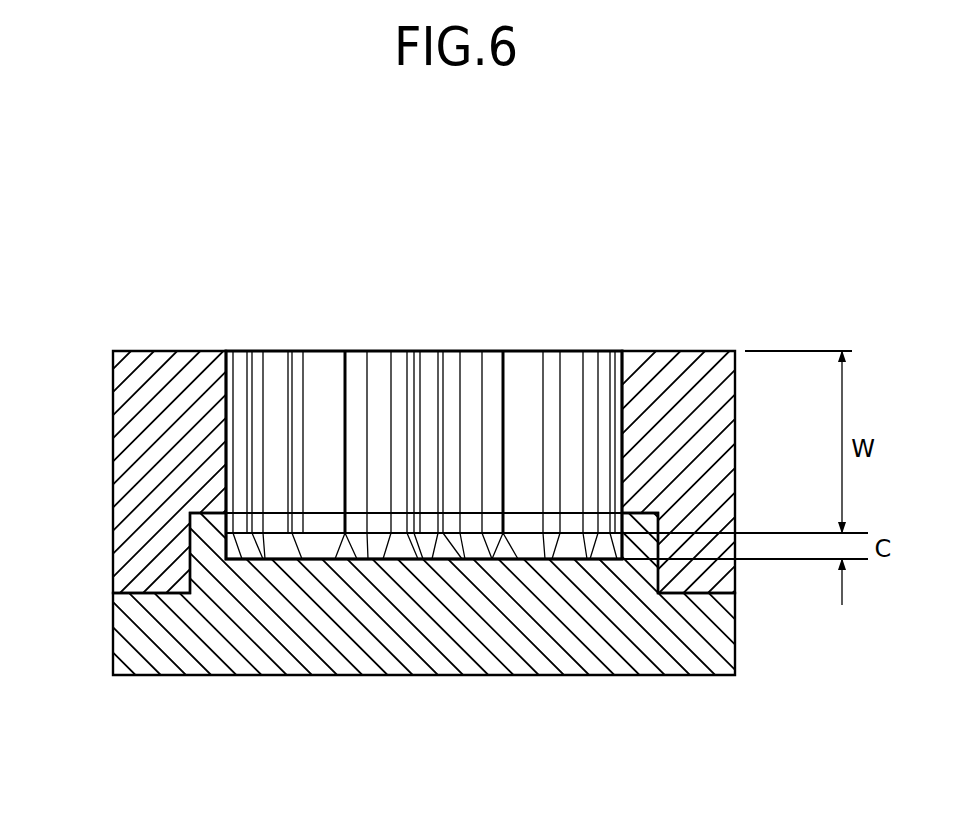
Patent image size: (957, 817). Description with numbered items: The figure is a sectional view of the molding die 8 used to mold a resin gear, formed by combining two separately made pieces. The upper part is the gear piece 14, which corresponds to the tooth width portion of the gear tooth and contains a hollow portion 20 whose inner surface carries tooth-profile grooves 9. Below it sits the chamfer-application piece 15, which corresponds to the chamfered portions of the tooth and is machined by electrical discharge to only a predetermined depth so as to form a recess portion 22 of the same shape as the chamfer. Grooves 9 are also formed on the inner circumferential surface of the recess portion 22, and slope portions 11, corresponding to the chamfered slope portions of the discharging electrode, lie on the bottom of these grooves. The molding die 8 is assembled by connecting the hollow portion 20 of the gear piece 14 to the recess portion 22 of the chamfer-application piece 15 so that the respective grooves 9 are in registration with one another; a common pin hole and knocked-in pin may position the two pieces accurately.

The molding die 8 is at (128, 328).
The grooves 9 is at (493, 363).
The slope portions 11 is at (475, 545).
The gear piece 14 is at (112, 427).
The chamfer-application piece 15 is at (112, 638).
The hollow portion 20 is at (323, 377).
The recess portion 22 is at (318, 545).